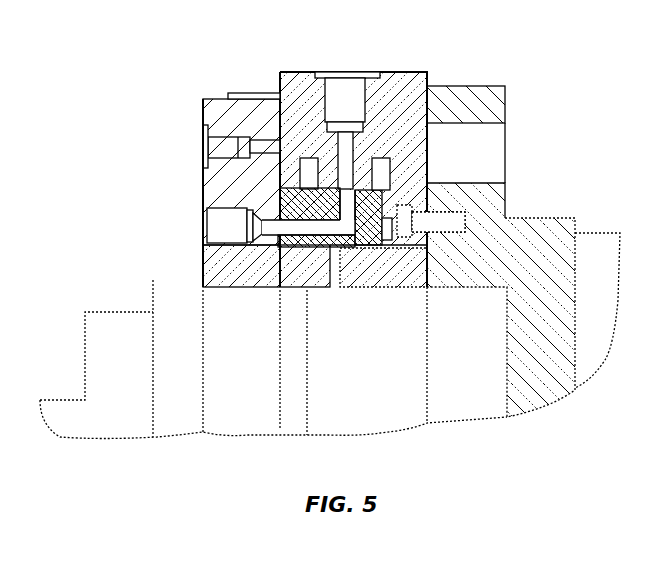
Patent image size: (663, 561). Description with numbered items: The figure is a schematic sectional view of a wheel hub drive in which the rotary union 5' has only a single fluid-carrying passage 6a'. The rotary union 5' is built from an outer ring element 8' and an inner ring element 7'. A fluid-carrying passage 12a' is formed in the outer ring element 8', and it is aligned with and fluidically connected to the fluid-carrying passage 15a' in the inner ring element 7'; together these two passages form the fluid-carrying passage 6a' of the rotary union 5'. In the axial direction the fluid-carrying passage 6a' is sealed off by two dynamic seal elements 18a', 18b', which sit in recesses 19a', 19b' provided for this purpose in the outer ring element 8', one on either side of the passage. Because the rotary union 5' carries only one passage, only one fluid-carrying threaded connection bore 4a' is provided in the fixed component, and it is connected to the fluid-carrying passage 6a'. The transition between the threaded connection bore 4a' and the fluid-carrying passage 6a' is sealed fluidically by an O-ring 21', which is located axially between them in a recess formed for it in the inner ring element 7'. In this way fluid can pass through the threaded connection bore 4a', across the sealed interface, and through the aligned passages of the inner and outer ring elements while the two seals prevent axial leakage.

The rotary union 5' is at (330, 222).
The outer ring element 8' is at (353, 151).
The fluid-carrying passage 12a' is at (347, 101).
The dynamic seal element 18a' is at (257, 160).
The dynamic seal element 18b' is at (466, 110).
The recess 19a' is at (234, 170).
The recess 19b' is at (482, 278).
The inner ring element 7' is at (265, 201).
The threaded connection bore 4a' is at (204, 225).
The fluid-carrying passage 15a' is at (251, 226).
The O-ring 21' is at (279, 283).
The fluid-carrying passage 6a' is at (402, 262).